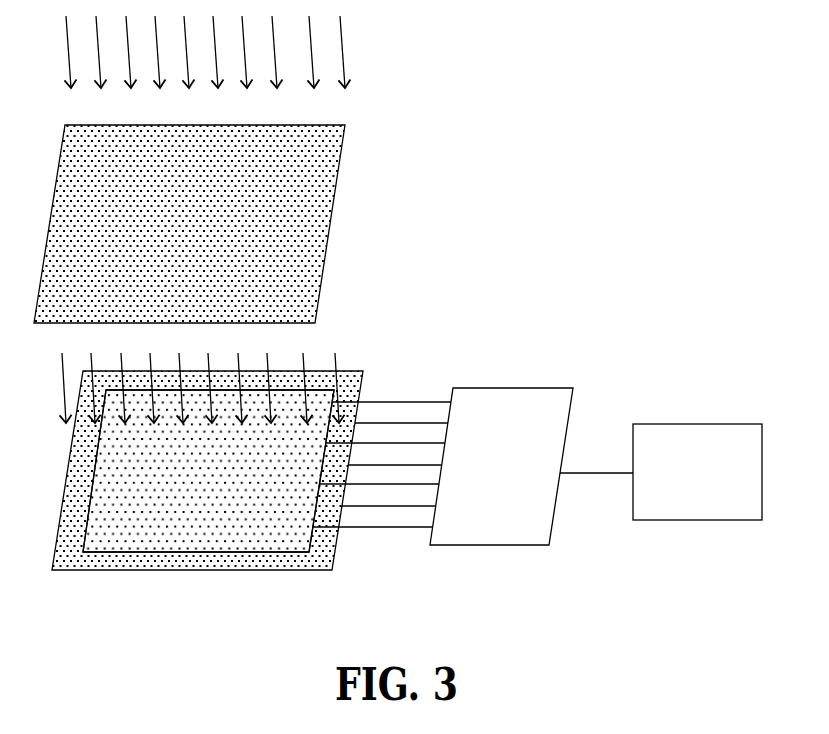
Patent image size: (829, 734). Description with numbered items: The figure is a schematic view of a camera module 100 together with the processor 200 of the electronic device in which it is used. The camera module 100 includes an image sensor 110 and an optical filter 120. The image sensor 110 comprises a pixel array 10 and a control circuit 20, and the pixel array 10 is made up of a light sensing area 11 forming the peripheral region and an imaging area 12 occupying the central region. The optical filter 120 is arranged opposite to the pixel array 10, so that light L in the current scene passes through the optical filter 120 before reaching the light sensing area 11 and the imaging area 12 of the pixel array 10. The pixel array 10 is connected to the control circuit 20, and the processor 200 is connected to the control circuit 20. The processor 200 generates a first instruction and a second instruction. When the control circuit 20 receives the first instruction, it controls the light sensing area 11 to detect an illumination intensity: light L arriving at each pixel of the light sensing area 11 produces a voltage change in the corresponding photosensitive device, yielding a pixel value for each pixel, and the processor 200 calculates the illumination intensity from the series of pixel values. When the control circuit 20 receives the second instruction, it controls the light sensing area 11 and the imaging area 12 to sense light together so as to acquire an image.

The camera module 100 is at (398, 326).
The image sensor 110 is at (312, 503).
The pixel array 10 is at (232, 497).
The light sensing area 11 is at (287, 568).
The imaging area 12 is at (213, 539).
The control circuit 20 is at (501, 490).
The optical filter 120 is at (302, 250).
The processor 200 is at (693, 520).
The light L is at (342, 33).